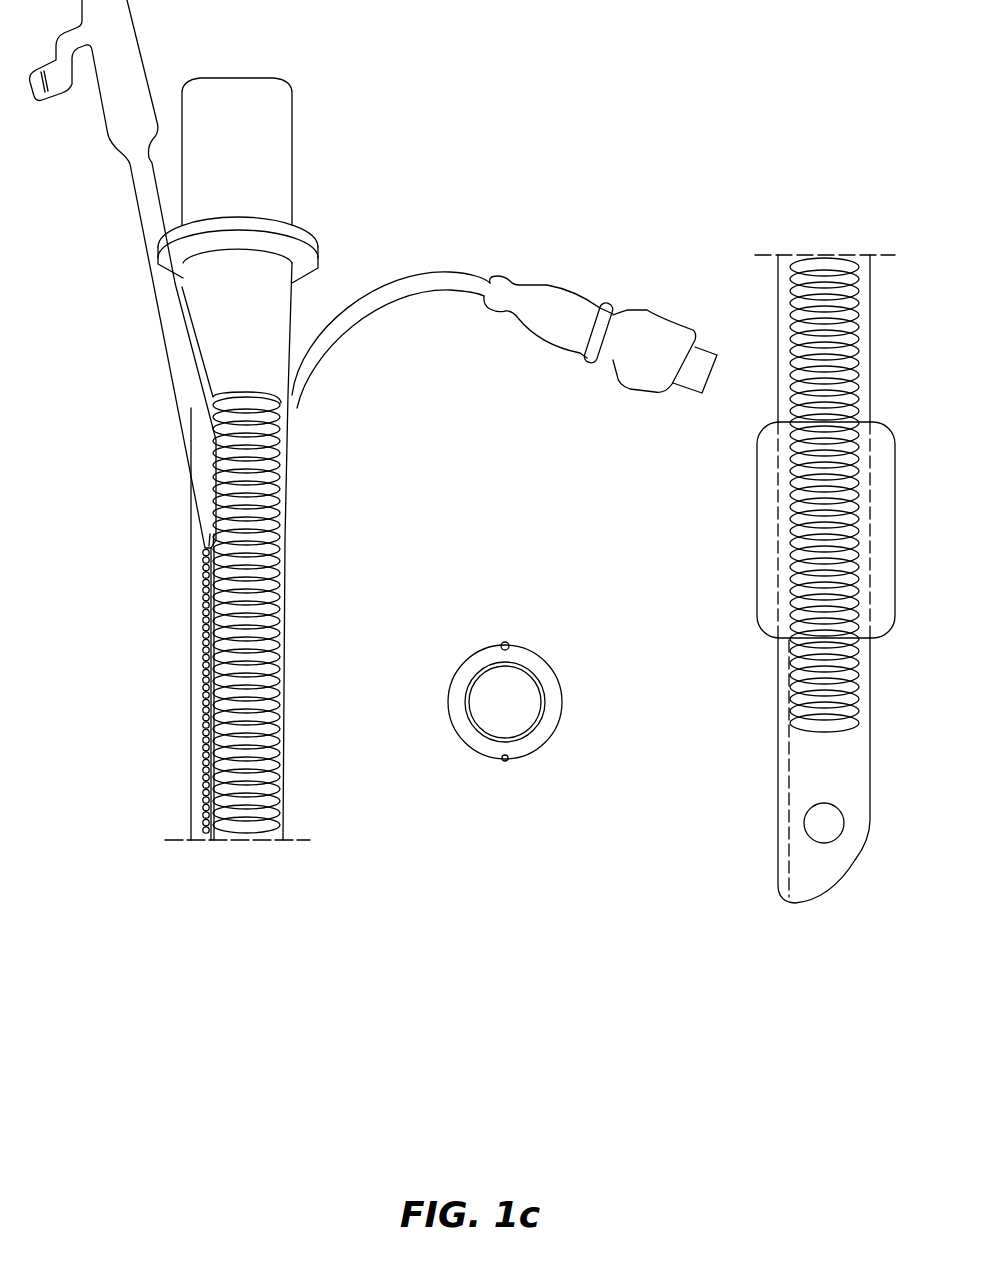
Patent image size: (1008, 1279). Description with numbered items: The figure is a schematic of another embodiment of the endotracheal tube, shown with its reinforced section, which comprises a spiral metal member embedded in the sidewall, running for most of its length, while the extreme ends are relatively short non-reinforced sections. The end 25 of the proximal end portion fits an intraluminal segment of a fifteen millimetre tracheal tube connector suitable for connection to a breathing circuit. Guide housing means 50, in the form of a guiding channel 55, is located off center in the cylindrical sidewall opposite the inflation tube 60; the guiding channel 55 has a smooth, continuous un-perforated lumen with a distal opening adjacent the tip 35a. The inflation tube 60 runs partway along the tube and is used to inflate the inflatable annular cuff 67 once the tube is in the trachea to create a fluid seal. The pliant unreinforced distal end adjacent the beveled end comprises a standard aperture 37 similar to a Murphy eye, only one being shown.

The end of proximal end portion 25 is at (285, 82).
The guide housing means 50 is at (186, 432).
The guiding channel 55 is at (196, 693).
The inflation tube 60 is at (508, 777).
The inflatable annular cuff 67 is at (757, 600).
The aperture 37 is at (803, 823).
The tip 35a is at (782, 892).